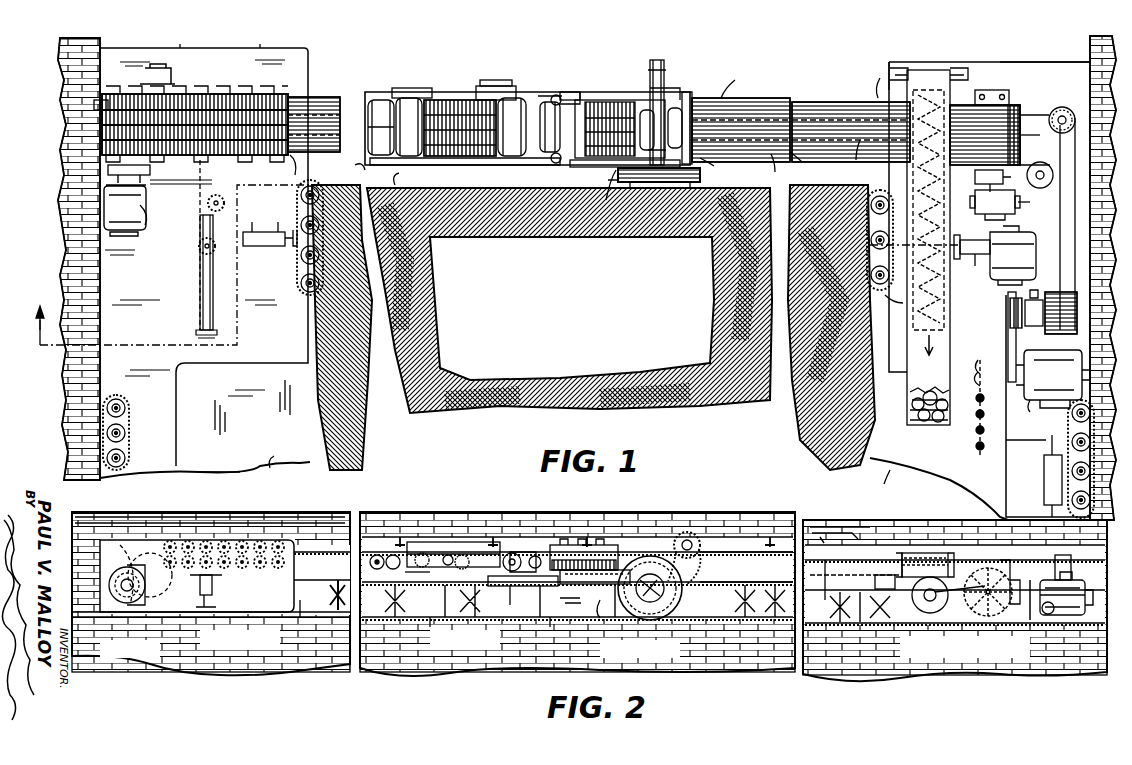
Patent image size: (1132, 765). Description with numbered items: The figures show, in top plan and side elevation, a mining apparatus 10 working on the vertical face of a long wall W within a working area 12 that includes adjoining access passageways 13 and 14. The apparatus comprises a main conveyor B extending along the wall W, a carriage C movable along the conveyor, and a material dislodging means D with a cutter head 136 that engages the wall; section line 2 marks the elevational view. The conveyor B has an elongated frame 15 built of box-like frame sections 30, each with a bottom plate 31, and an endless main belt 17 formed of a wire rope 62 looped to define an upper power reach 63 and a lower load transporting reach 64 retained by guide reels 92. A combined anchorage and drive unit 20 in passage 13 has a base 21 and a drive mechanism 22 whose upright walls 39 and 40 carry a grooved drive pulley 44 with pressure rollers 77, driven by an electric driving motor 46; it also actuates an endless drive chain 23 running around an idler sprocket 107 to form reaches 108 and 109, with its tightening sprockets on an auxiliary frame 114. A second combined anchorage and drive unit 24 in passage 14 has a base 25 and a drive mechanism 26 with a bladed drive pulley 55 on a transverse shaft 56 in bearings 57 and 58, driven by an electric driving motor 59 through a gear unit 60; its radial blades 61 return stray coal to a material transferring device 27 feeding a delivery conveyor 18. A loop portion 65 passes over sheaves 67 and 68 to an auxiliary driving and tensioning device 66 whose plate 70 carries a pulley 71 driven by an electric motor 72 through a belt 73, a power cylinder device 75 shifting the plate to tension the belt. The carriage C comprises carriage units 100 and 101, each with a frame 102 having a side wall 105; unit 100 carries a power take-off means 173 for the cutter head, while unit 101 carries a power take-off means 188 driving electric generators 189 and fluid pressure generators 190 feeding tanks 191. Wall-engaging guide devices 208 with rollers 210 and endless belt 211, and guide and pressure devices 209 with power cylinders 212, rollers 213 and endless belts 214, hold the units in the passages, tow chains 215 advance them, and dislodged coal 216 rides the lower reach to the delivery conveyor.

In FIG. 1, the mining apparatus 10 is at (674, 98).
In FIG. 2, the mining apparatus 10 is at (520, 538).
In FIG. 1, the working area 12 is at (683, 46).
In FIG. 1, the access passageway 13 is at (248, 480).
In FIG. 1, the access passageway 14 is at (880, 483).
In FIG. 2, the conveyor frame 15 is at (314, 606).
In FIG. 1, the main belt 17 is at (748, 96).
In FIG. 2, the main belt 17 is at (781, 540).
In FIG. 1, the delivery conveyor 18 is at (950, 320).
In FIG. 2, the delivery conveyor 18 is at (924, 552).
In FIG. 1, the combined anchorage and drive unit 20 is at (205, 46).
In FIG. 1, the base 21 is at (276, 47).
In FIG. 1, the drive mechanism 22 is at (110, 170).
In FIG. 2, the drive mechanism 22 is at (128, 503).
In FIG. 1, the endless drive chain 23 is at (196, 178).
In FIG. 2, the endless drive chain 23 is at (340, 574).
In FIG. 1, the second combined anchorage and drive unit 24 is at (990, 44).
In FIG. 1, the base 25 is at (1040, 44).
In FIG. 1, the drive mechanism 26 is at (968, 200).
In FIG. 1, the material transferring device 27 is at (900, 162).
In FIG. 2, the material transferring device 27 is at (930, 614).
In FIG. 2, the frame sections 30 is at (455, 572).
In FIG. 2, the bottom plate 31 is at (442, 616).
In FIG. 1, the upright wall 39 is at (290, 94).
In FIG. 2, the upright wall 39 is at (558, 612).
In FIG. 1, the upright wall 40 is at (295, 167).
In FIG. 1, the drive pulley 44 is at (202, 92).
In FIG. 2, the drive pulley 44 is at (172, 612).
In FIG. 1, the electric driving motor 46 is at (148, 224).
In FIG. 2, the electric driving motor 46 is at (130, 606).
In FIG. 1, the drive pulley 55 is at (1020, 136).
In FIG. 2, the drive pulley 55 is at (1002, 578).
In FIG. 1, the transverse shaft 56 is at (1047, 86).
In FIG. 2, the transverse shaft 56 is at (1006, 620).
In FIG. 1, the bearing 57 is at (1010, 68).
In FIG. 1, the bearing 58 is at (999, 178).
In FIG. 1, the electric driving motor 59 is at (1035, 246).
In FIG. 1, the gear unit 60 is at (1033, 202).
In FIG. 2, the radial blades 61 is at (982, 612).
In FIG. 1, the wire rope 62 is at (830, 104).
In FIG. 2, the wire rope 62 is at (830, 558).
In FIG. 1, the upper reach 63 is at (858, 100).
In FIG. 2, the upper reach 63 is at (742, 548).
In FIG. 2, the lower reach 64 is at (602, 617).
In FIG. 1, the loop portion 65 is at (1068, 254).
In FIG. 1, the auxiliary driving and tensioning device 66 is at (1071, 366).
In FIG. 2, the auxiliary driving and tensioning device 66 is at (1085, 578).
In FIG. 1, the sheave 67 is at (1062, 106).
In FIG. 1, the sheave 68 is at (1044, 174).
In FIG. 1, the plate 70 is at (1012, 430).
In FIG. 1, the pulley 71 is at (1048, 294).
In FIG. 1, the electric motor 72 is at (1021, 407).
In FIG. 1, the belt 73 is at (1010, 332).
In FIG. 1, the power cylinder device 75 is at (1054, 473).
In FIG. 2, the power cylinder device 75 is at (1053, 572).
In FIG. 1, the pressure rollers 77 is at (94, 106).
In FIG. 2, the guide reels 92 is at (536, 596).
In FIG. 1, the carriage unit 100 is at (592, 164).
In FIG. 2, the carriage unit 100 is at (626, 546).
In FIG. 1, the carriage unit 101 is at (490, 98).
In FIG. 2, the carriage unit 101 is at (480, 525).
In FIG. 1, the carriage frame 102 is at (452, 98).
In FIG. 1, the side wall 105 is at (1090, 48).
In FIG. 1, the idler sprocket 107 is at (869, 88).
In FIG. 2, the idler sprocket 107 is at (872, 568).
In FIG. 1, the chain reach 108 is at (806, 164).
In FIG. 1, the chain reach 109 is at (806, 100).
In FIG. 1, the auxiliary frame 114 is at (198, 266).
In FIG. 2, the auxiliary frame 114 is at (216, 598).
In FIG. 1, the cutter head 136 is at (652, 182).
In FIG. 2, the cutter head 136 is at (666, 548).
In FIG. 1, the power take-off means 173 is at (600, 98).
In FIG. 2, the power take-off means 173 is at (602, 538).
In FIG. 1, the power take-off means 188 is at (480, 160).
In FIG. 2, the power take-off means 188 is at (432, 529).
In FIG. 1, the electric generators 189 is at (416, 96).
In FIG. 1, the fluid pressure generators 190 is at (347, 173).
In FIG. 1, the tanks 191 is at (378, 96).
In FIG. 1, the wall-engaging guide devices 208 is at (128, 408).
In FIG. 2, the wall-engaging guide devices 208 is at (1054, 620).
In FIG. 1, the wall-engaging guide and pressure devices 209 is at (302, 282).
In FIG. 1, the rollers 210 is at (126, 434).
In FIG. 1, the endless belt 211 is at (126, 456).
In FIG. 1, the power cylinders 212 is at (262, 245).
In FIG. 1, the rollers 213 is at (298, 200).
In FIG. 1, the endless belts 214 is at (300, 224).
In FIG. 1, the tow chains 215 is at (980, 452).
In FIG. 1, the coal 216 is at (928, 416).
In FIG. 1, the section line 2 is at (37, 310).
In FIG. 1, the main conveyor B is at (766, 167).
In FIG. 2, the main conveyor B is at (826, 558).
In FIG. 1, the carriage C is at (732, 79).
In FIG. 2, the carriage C is at (610, 576).
In FIG. 1, the material dislodging means D is at (606, 182).
In FIG. 2, the material dislodging means D is at (700, 534).
In FIG. 1, the long wall W is at (402, 175).